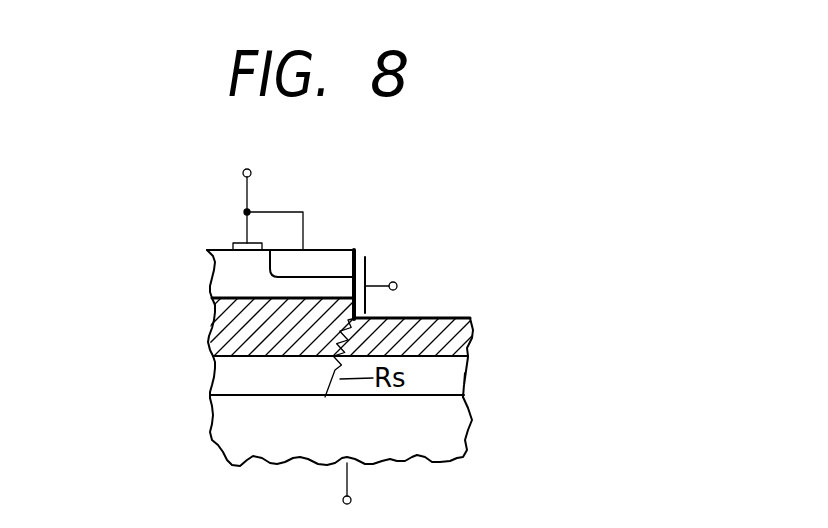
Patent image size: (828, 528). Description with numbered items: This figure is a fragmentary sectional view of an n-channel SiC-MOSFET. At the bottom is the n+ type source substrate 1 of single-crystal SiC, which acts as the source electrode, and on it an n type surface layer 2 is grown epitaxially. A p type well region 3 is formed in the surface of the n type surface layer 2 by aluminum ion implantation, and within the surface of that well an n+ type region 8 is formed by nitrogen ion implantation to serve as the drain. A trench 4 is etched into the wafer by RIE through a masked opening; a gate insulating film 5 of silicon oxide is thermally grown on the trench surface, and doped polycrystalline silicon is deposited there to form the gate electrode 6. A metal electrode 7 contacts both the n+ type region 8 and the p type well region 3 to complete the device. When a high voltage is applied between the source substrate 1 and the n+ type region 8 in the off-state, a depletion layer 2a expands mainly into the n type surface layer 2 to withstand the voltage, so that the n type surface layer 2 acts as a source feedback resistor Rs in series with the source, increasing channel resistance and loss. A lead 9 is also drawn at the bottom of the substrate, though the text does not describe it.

The n+ type source substrate 1 is at (455, 427).
The n type surface layer 2 is at (247, 379).
The depletion layer 2a is at (247, 337).
The p type well region 3 is at (223, 287).
The trench 4 is at (392, 265).
The gate insulating film 5 is at (361, 252).
The gate electrode 6 is at (365, 307).
The metal electrode 7 is at (247, 193).
The n+ type region 8 is at (325, 255).
The drain electrode 9 is at (348, 482).